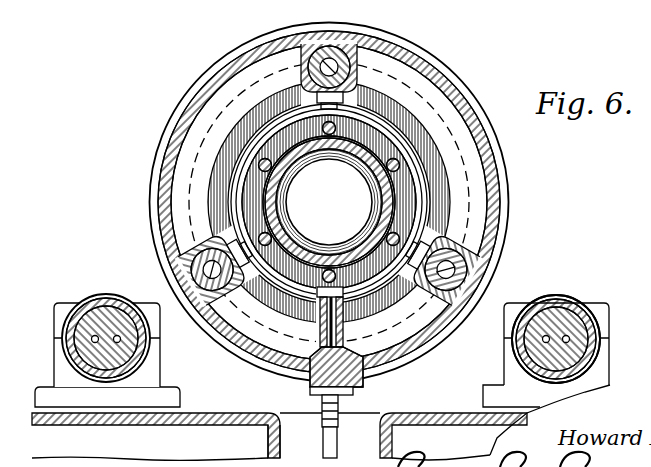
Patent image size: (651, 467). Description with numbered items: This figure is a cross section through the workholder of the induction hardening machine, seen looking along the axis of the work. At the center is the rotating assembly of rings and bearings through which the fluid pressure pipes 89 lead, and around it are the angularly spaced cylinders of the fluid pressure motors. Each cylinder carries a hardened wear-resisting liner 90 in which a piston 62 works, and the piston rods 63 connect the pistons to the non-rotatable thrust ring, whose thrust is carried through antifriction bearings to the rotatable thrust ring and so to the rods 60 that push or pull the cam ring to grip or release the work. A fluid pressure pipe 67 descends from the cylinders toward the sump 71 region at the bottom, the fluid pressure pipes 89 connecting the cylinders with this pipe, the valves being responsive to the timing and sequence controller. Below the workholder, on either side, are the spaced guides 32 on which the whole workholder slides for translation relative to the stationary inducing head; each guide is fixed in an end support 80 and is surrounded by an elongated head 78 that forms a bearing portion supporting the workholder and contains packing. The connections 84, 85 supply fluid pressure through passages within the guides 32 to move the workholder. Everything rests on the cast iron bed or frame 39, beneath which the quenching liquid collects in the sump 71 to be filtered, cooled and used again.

The spaced guides 32 is at (63, 332).
The cast iron bed or frame 39 is at (450, 413).
The rods 60 is at (327, 127).
The pistons 62 is at (348, 80).
The piston rods 63 is at (308, 68).
The fluid pressure pipe 67 is at (333, 449).
The sump 71 is at (293, 428).
The elongated head 78 is at (558, 302).
The end support 80 is at (610, 322).
The connection 84 is at (94, 318).
The connection 85 is at (118, 322).
The fluid pressure pipes 89 is at (420, 172).
The hardened wear-resisting liner 90 is at (351, 66).